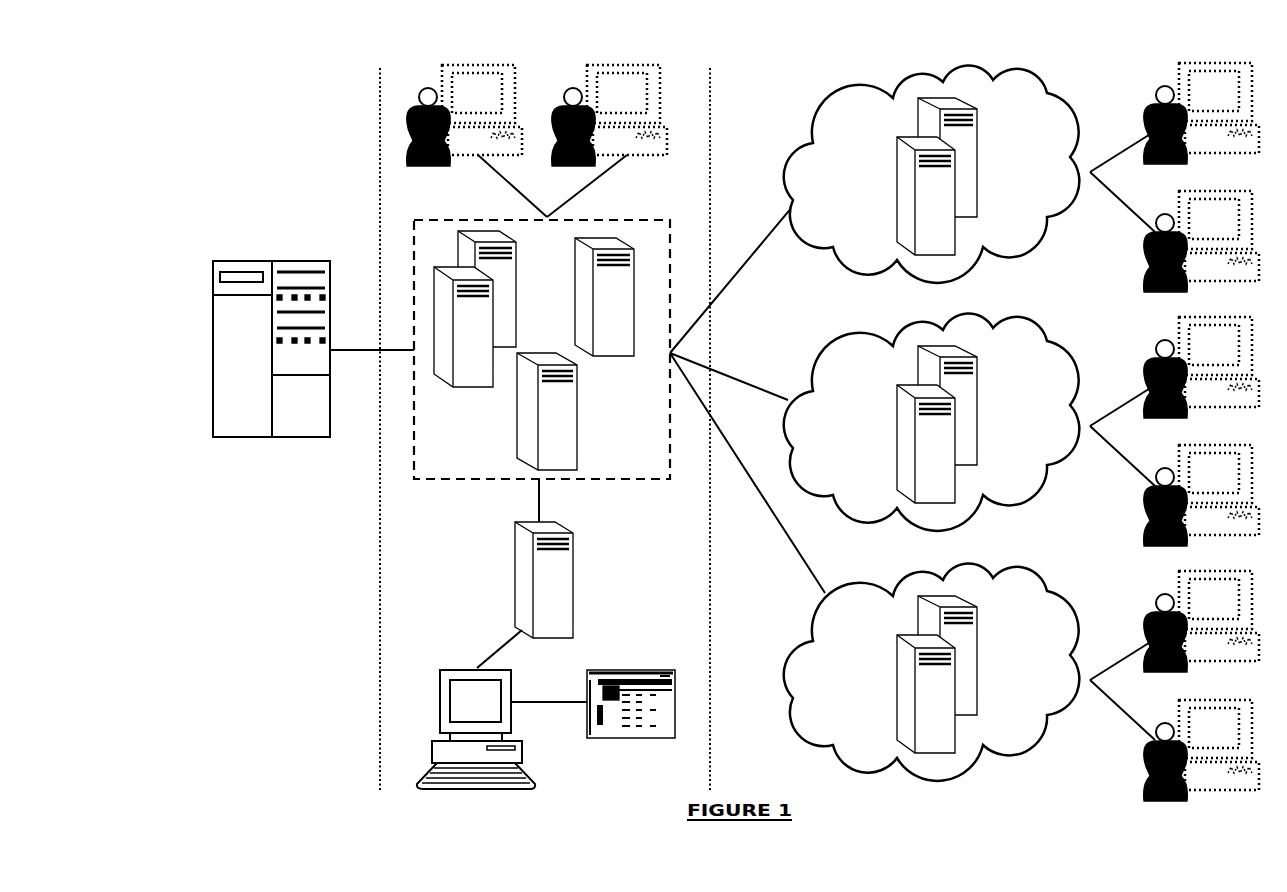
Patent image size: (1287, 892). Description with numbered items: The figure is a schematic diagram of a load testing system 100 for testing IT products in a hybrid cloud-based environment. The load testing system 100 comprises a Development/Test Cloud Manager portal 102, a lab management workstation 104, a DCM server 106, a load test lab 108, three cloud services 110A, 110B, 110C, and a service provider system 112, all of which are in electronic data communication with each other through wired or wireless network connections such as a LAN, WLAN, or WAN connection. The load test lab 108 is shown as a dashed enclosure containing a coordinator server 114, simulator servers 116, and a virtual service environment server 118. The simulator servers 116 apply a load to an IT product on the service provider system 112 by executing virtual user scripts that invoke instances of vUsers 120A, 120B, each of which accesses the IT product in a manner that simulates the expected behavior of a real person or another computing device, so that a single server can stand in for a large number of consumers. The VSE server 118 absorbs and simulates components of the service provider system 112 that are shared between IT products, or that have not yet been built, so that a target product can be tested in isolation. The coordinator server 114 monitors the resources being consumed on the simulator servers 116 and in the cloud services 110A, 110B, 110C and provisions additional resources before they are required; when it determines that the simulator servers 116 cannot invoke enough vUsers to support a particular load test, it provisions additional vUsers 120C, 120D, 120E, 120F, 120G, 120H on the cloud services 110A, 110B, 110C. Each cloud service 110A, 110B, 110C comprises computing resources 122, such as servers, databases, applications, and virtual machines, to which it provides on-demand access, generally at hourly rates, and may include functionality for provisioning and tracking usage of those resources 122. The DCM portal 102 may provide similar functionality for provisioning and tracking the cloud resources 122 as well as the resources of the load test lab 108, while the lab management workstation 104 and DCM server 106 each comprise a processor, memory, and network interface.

The load testing system 100 is at (255, 723).
The Development/Test Cloud Manager (DCM) portal 102 is at (630, 738).
The lab management workstation 104 is at (460, 668).
The DCM server 106 is at (573, 589).
The load test lab 108 is at (468, 480).
The cloud service 110A is at (1033, 254).
The cloud service 110B is at (933, 436).
The cloud service 110C is at (932, 686).
The service provider system 112 is at (272, 437).
The coordinator server 114 is at (577, 451).
The simulator servers 116 is at (470, 387).
The virtual service environment (VSE) server 118 is at (610, 356).
The vUser 120A is at (462, 155).
The vUser 120B is at (657, 155).
The vUser 120C is at (1180, 68).
The vUser 120D is at (1147, 244).
The vUser 120E is at (1180, 322).
The vUser 120F is at (1147, 498).
The vUser 120G is at (1180, 576).
The vUser 120H is at (1147, 752).
The computing resources 122 is at (977, 167).